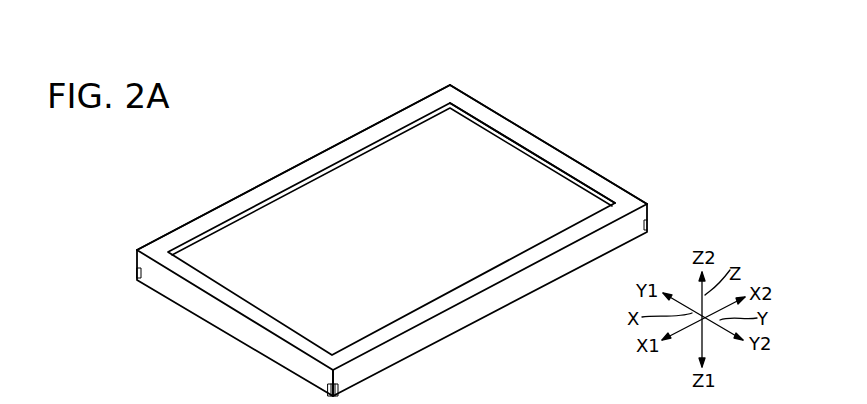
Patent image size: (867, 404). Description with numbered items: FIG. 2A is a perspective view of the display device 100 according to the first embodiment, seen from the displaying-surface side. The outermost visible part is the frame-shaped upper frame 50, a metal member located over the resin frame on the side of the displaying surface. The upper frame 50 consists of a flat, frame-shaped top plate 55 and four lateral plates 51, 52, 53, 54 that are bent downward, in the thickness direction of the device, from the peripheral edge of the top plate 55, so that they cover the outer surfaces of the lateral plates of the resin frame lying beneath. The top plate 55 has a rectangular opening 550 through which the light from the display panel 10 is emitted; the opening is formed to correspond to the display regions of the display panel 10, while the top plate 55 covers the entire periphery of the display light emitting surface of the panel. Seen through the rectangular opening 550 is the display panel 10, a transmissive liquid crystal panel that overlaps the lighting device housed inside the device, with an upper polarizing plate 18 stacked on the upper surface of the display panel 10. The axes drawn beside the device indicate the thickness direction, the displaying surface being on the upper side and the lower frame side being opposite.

The display device 100 is at (561, 91).
The display panel 10 is at (313, 195).
The upper polarizing plate 18 is at (403, 157).
The upper frame 50 is at (491, 98).
The lateral plate 51 is at (197, 218).
The lateral plate 52 is at (527, 294).
The lateral plate 53 is at (168, 284).
The lateral plate 54 is at (603, 177).
The top plate 55 is at (570, 167).
The rectangular opening 550 is at (527, 146).